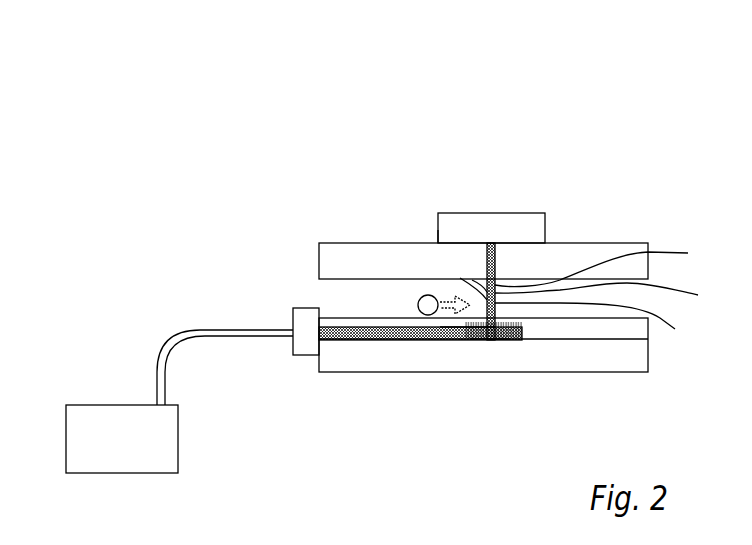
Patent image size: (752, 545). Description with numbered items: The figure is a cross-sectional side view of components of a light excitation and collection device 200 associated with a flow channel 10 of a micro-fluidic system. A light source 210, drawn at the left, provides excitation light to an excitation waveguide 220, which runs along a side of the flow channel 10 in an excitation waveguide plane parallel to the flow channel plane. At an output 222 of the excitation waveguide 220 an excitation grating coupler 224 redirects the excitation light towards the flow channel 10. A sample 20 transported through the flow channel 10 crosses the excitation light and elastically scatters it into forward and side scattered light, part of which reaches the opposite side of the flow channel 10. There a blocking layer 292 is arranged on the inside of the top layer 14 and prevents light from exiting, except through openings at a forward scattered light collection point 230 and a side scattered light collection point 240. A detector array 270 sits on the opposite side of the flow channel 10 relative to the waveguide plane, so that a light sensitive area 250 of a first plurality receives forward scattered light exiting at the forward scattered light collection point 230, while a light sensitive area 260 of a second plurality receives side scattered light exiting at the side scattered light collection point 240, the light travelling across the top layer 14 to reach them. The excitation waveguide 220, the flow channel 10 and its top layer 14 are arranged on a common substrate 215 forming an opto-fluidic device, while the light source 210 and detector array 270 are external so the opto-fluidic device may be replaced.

The light excitation and collection device 200 is at (216, 152).
The flow channel 10 is at (355, 297).
The sample 20 is at (420, 298).
The light sensitive area 260 is at (452, 242).
The light sensitive area 250 is at (490, 243).
The detector array 270 is at (513, 217).
The top layer 14 is at (563, 258).
The forward scattered light collection point 230 is at (615, 269).
The side scattered light collection point 240 is at (618, 301).
The blocking layer 292 is at (604, 329).
The light source 210 is at (105, 403).
The excitation waveguide 220 is at (345, 340).
The excitation grating coupler 224 is at (473, 337).
The output 222 is at (490, 338).
The common substrate 215 is at (572, 353).